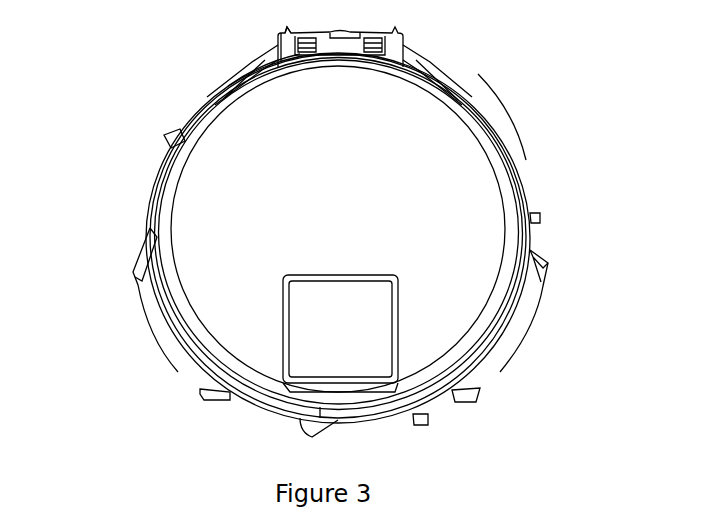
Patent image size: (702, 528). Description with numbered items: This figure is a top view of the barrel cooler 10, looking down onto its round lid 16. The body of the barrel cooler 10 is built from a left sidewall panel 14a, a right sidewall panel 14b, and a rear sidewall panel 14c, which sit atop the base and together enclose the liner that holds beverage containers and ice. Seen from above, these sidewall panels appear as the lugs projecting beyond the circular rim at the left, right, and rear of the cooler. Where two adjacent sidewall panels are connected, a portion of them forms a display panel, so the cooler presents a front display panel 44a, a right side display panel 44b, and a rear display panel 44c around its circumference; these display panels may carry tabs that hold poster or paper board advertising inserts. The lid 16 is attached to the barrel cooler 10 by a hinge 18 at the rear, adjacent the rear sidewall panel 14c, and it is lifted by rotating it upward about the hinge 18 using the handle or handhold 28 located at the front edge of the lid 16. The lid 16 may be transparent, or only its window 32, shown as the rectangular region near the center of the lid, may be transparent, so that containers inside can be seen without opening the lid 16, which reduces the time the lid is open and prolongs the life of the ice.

The barrel cooler 10 is at (114, 132).
The left sidewall panel 14a is at (152, 323).
The right sidewall panel 14b is at (533, 317).
The rear sidewall panel 14c is at (348, 30).
The lid 16 is at (172, 226).
The hinge 18 is at (277, 47).
The handle or handhold 28 is at (312, 425).
The window 32 is at (372, 298).
The front display panel 44a is at (264, 413).
The right side display panel 44b is at (512, 157).
The rear display panel 44c is at (212, 97).